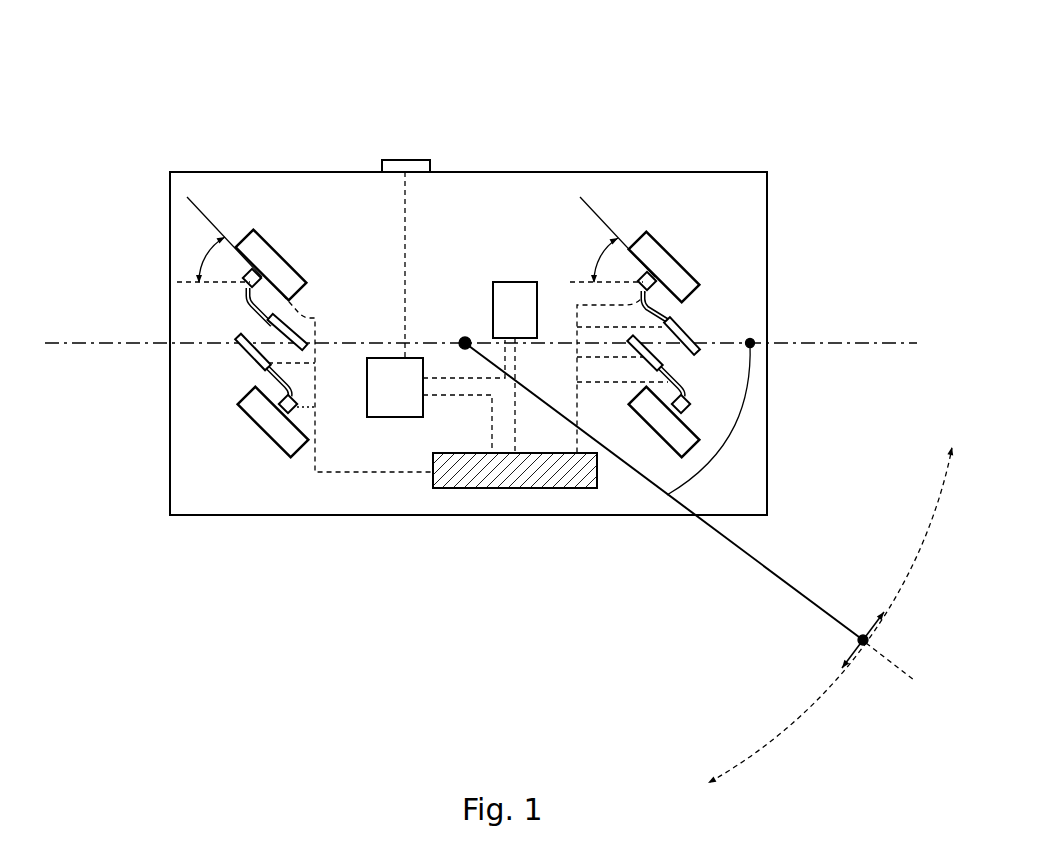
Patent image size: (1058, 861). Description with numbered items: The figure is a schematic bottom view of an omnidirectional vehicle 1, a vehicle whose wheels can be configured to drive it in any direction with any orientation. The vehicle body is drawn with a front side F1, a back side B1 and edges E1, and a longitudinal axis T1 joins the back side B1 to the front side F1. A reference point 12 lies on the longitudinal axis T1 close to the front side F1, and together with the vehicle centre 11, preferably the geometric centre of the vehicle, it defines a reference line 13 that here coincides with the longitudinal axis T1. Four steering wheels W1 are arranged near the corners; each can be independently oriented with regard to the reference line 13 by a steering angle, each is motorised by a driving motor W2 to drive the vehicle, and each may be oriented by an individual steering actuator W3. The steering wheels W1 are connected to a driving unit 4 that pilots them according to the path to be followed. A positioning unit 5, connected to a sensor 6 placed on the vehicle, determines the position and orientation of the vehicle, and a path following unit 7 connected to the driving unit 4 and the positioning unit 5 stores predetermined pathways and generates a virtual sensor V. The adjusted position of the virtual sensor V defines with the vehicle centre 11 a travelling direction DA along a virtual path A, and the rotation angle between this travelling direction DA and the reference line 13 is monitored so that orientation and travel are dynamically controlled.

The omnidirectional vehicle 1 is at (551, 138).
The driving unit 4 is at (511, 489).
The positioning unit 5 is at (392, 357).
The sensor 6 is at (405, 160).
The path following unit 7 is at (516, 282).
The vehicle centre 11 is at (463, 338).
The reference point 12 is at (753, 342).
The reference line 13 is at (557, 338).
The virtual path A is at (901, 674).
The back side B1 is at (170, 225).
The travelling direction DA is at (780, 575).
The edges E1 is at (468, 172).
The front side F1 is at (767, 240).
The longitudinal axis T1 is at (499, 344).
The virtual sensor V is at (870, 638).
The steering wheel W1 is at (265, 238).
The driving motor W2 is at (246, 276).
The steering actuator W3 is at (268, 330).